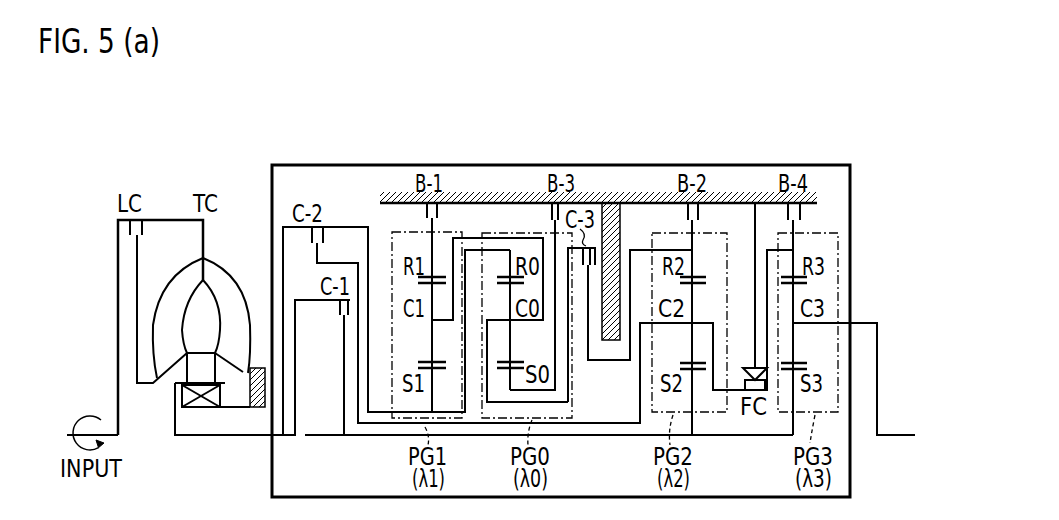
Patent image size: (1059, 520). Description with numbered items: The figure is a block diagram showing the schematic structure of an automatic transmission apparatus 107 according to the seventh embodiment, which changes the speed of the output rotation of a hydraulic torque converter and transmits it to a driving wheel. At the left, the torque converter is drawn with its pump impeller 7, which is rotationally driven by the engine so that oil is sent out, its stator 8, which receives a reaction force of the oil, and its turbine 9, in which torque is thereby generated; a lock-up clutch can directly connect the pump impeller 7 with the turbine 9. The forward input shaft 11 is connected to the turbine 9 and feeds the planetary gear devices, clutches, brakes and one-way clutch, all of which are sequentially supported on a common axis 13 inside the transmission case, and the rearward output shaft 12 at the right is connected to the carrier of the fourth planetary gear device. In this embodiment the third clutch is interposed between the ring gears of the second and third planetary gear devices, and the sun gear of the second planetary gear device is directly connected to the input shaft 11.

The automatic transmission apparatus 107 is at (595, 165).
The pump impeller 7 is at (228, 284).
The turbine 9 is at (178, 285).
The stator 8 is at (188, 366).
The input shaft 11 is at (231, 437).
The common axis 13 is at (316, 437).
The output shaft 12 is at (896, 437).